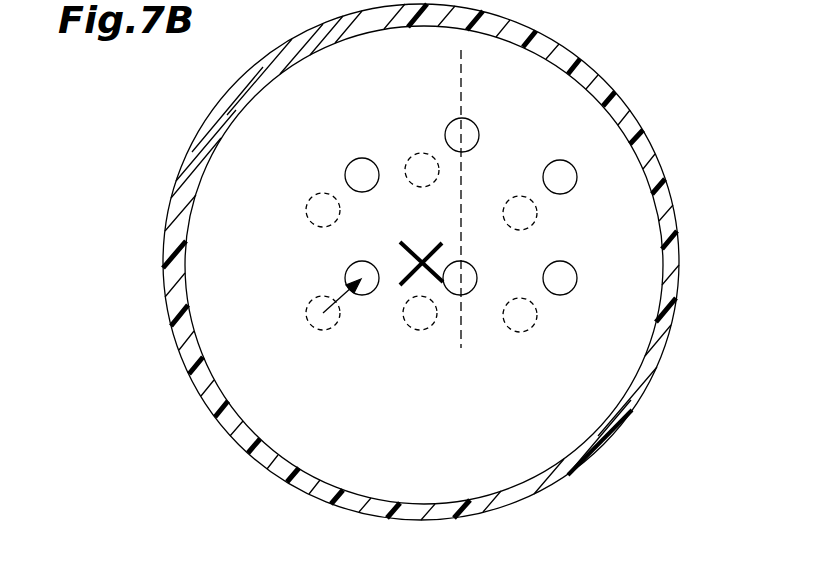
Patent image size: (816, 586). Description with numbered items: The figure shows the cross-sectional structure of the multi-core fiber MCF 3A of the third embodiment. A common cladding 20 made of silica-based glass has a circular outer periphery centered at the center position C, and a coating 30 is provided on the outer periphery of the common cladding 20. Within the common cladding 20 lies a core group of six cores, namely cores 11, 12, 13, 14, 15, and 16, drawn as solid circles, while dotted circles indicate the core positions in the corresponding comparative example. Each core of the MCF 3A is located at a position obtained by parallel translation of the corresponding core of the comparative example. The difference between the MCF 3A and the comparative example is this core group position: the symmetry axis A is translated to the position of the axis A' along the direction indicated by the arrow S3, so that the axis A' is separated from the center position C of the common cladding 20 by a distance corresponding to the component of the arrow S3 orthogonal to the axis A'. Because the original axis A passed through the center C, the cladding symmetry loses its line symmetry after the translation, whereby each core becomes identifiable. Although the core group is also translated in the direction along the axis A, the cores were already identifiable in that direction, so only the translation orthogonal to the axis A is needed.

The MCF 3A is at (442, 262).
The core 11 is at (362, 158).
The core 12 is at (467, 117).
The core 13 is at (558, 160).
The core 14 is at (362, 296).
The core 15 is at (465, 262).
The core 16 is at (562, 296).
The common cladding 20 is at (690, 333).
The coating 30 is at (710, 44).
The arrow S3 is at (340, 294).
The center position C is at (410, 244).
The axis A is at (458, 76).